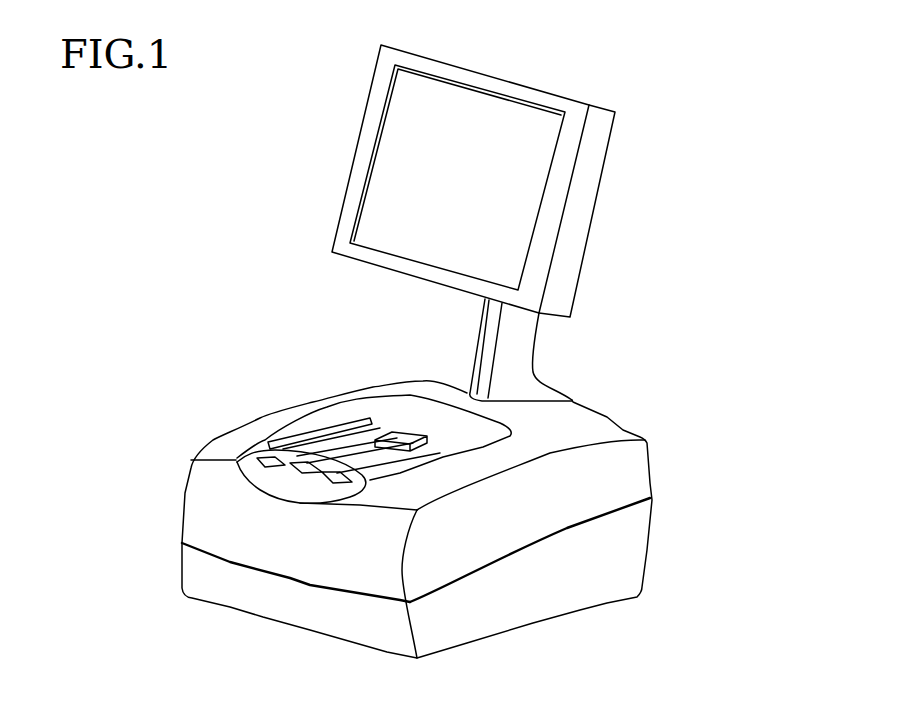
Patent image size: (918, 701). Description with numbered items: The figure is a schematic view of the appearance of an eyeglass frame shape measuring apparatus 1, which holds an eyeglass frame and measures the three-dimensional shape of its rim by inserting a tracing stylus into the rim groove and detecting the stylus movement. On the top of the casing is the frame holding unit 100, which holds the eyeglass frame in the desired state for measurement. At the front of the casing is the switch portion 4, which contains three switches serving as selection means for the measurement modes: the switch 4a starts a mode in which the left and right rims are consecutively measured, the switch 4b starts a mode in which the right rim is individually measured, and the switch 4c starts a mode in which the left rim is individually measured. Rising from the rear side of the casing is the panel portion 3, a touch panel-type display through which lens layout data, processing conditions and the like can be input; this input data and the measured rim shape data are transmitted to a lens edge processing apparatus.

The eyeglass frame shape measuring apparatus 1 is at (262, 256).
The panel portion 3 is at (523, 182).
The frame holding unit 100 is at (300, 420).
The switch portion 4 is at (206, 471).
The switch 4a is at (305, 472).
The switch 4b is at (330, 482).
The switch 4c is at (268, 462).